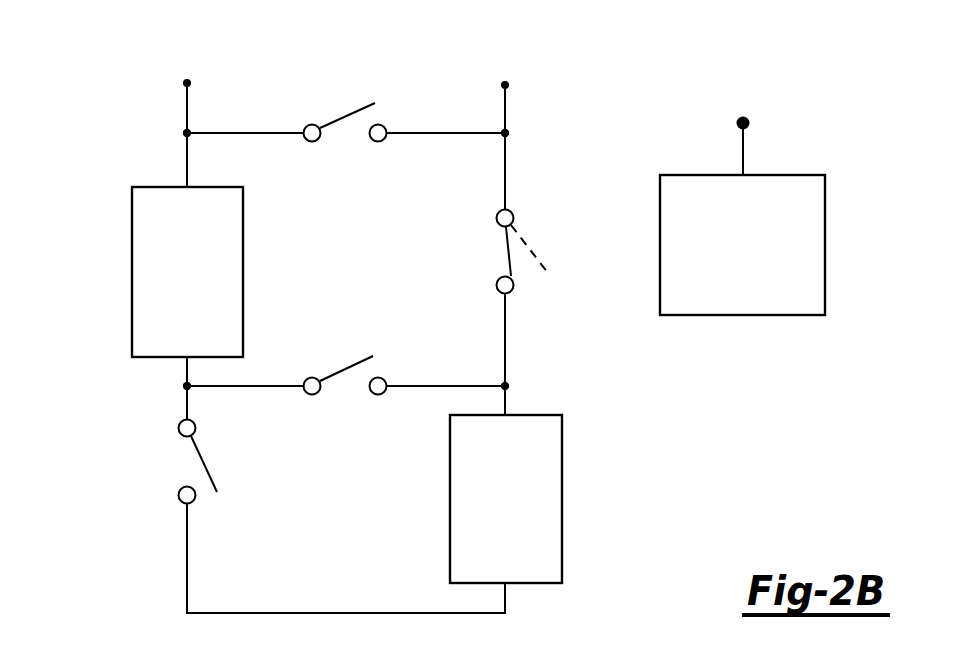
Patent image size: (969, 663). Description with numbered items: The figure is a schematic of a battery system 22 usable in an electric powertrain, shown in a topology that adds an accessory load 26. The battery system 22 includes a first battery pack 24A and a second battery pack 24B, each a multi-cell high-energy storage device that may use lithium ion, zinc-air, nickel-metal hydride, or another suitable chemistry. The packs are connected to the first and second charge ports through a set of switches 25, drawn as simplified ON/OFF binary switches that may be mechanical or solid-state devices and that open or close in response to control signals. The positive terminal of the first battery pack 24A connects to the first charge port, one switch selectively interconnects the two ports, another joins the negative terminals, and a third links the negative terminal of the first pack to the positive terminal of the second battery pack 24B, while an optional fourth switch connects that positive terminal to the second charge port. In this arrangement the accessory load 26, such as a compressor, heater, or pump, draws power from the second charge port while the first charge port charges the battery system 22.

The battery system 22 is at (401, 41).
The switches 25 is at (327, 95).
The first battery pack 24A is at (132, 272).
The second battery pack 24B is at (562, 499).
The accessory load 26 is at (825, 246).